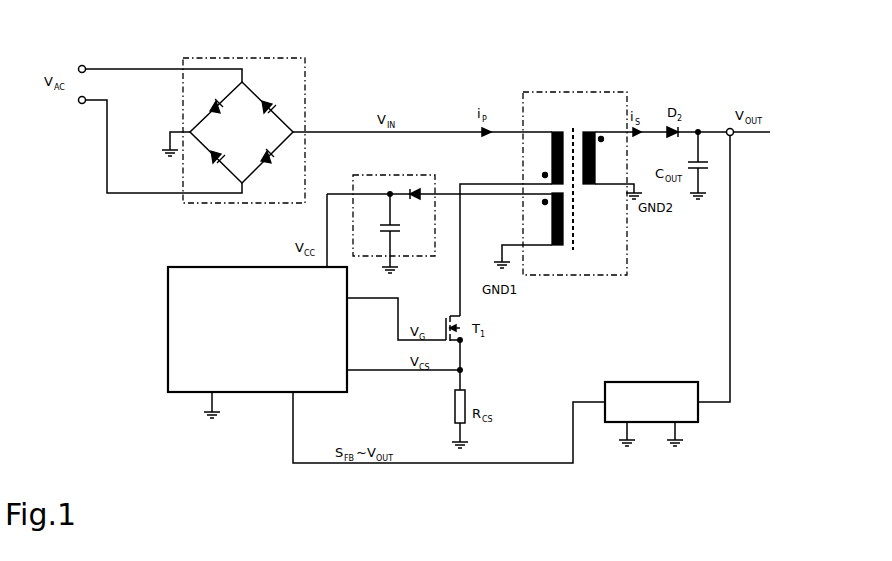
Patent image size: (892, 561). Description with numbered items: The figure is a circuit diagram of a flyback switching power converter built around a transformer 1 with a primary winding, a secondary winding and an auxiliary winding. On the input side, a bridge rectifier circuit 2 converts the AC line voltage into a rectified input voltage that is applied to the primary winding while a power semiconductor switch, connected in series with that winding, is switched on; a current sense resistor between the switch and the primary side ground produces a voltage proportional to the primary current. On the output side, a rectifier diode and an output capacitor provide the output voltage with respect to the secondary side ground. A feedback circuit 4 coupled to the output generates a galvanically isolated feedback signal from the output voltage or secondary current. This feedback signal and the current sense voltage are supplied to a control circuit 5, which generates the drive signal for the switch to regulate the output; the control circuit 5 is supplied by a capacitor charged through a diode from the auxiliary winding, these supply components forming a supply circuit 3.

The transformer 1 is at (575, 176).
The bridge rectifier circuit 2 is at (233, 139).
The supply circuit 3 is at (400, 213).
The feedback circuit 4 is at (651, 402).
The control circuit 5 is at (257, 329).